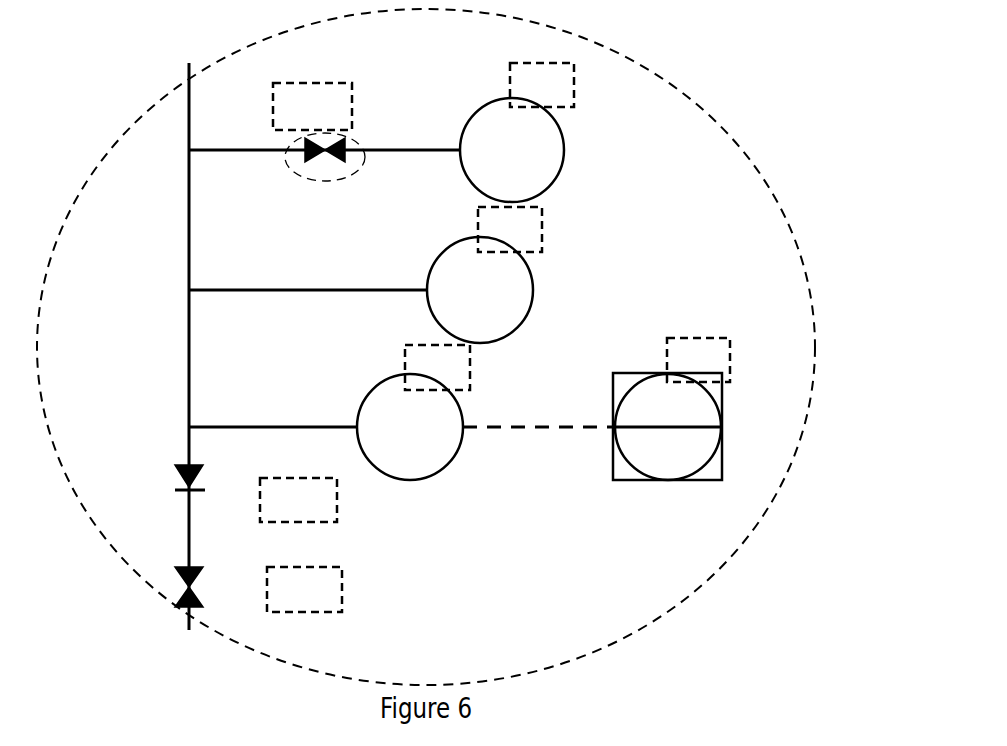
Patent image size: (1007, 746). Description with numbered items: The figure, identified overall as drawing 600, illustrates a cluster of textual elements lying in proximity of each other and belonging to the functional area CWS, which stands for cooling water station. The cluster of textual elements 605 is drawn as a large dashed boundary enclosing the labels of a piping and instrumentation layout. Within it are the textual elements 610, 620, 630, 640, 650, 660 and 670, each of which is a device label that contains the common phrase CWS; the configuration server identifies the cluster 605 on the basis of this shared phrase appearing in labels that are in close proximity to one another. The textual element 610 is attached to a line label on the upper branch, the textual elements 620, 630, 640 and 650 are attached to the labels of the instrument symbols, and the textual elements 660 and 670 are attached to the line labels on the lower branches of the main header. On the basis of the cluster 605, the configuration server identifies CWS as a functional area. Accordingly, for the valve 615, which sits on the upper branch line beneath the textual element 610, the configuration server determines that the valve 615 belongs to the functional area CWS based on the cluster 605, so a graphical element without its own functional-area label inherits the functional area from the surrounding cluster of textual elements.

The cooling water supply instrumentation system 600 is at (856, 43).
The cluster of textual elements 605 is at (717, 113).
The textual element 610 is at (310, 83).
The valve 615 is at (338, 181).
The textual element 620 is at (574, 88).
The textual element 630 is at (542, 232).
The textual element 640 is at (470, 370).
The textual element 650 is at (730, 362).
The textual element 660 is at (300, 522).
The textual element 670 is at (305, 612).